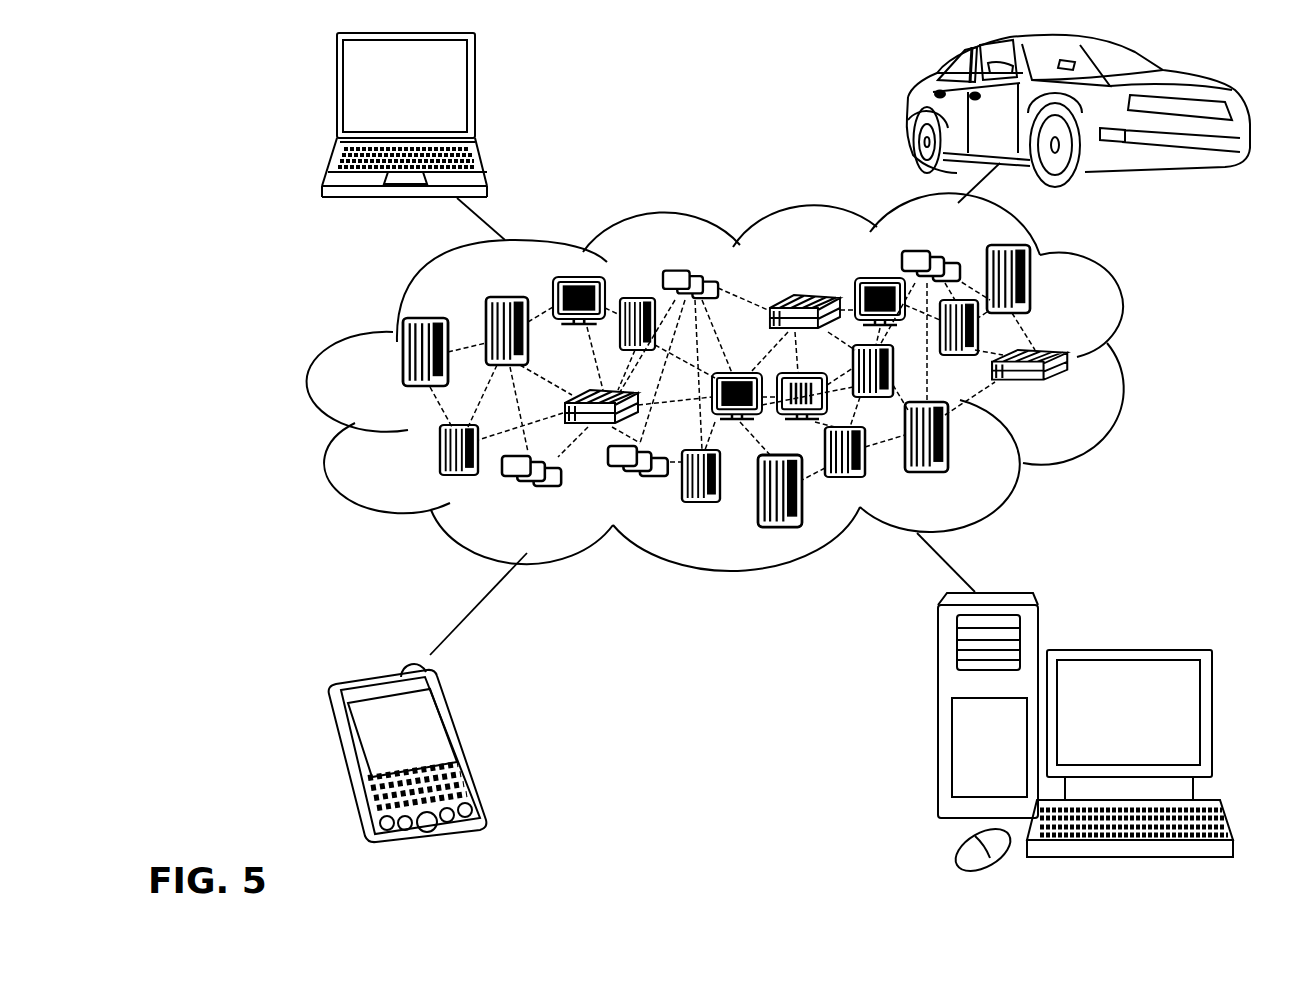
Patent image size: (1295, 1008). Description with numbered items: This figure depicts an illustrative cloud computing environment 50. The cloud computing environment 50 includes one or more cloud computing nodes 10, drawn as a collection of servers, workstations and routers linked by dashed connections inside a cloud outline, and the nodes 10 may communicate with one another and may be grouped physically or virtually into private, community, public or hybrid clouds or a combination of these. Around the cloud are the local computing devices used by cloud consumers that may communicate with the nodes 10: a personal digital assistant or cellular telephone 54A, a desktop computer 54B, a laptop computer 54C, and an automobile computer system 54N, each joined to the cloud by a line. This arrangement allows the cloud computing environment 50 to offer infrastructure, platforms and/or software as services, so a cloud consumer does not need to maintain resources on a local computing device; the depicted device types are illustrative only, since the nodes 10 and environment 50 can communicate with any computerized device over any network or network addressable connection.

The cloud computing node 10 is at (1068, 395).
The cloud computing environment 50 is at (752, 382).
The personal digital assistant or cellular telephone 54A is at (465, 741).
The desktop computer 54B is at (1124, 647).
The laptop computer 54C is at (477, 93).
The automobile computer system 54N is at (908, 110).